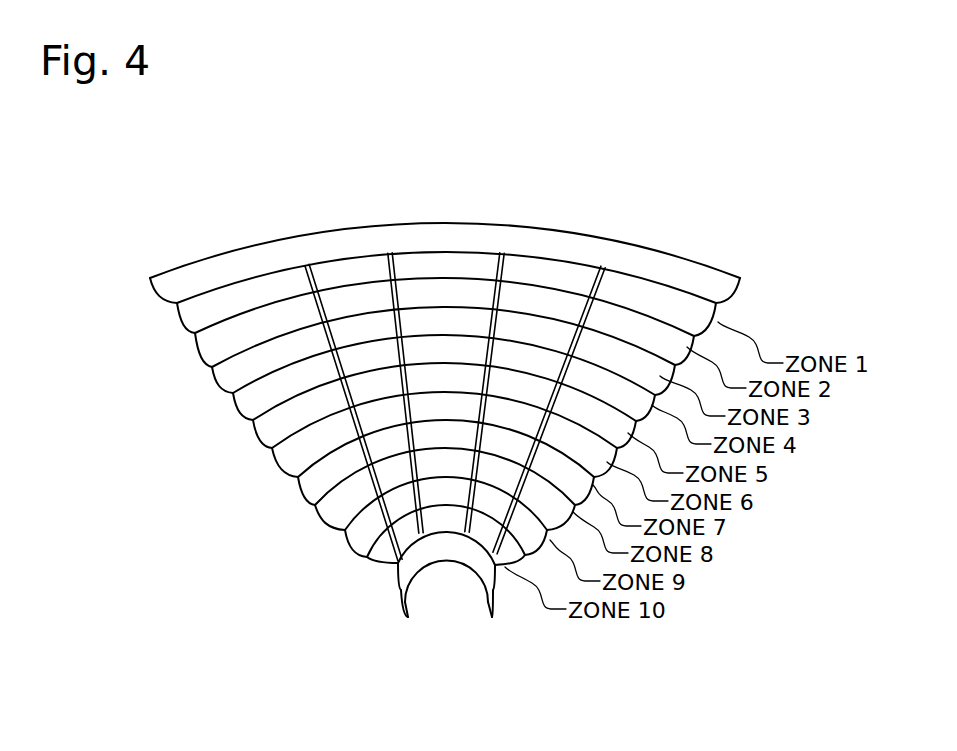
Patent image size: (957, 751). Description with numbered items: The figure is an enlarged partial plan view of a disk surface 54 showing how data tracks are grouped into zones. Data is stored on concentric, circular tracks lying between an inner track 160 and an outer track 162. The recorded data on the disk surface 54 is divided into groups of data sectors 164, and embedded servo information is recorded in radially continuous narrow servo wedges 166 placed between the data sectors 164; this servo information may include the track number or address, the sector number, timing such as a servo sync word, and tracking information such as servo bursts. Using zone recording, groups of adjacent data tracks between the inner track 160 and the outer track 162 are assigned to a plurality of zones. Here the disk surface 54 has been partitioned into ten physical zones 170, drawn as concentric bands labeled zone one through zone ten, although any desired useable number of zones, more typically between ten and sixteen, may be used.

The disk surface 54 is at (125, 242).
The inner track 160 is at (443, 535).
The outer track 162 is at (523, 254).
The data sectors 164 is at (413, 267).
The servo wedges 166 is at (400, 293).
The physical zones 170 is at (530, 300).